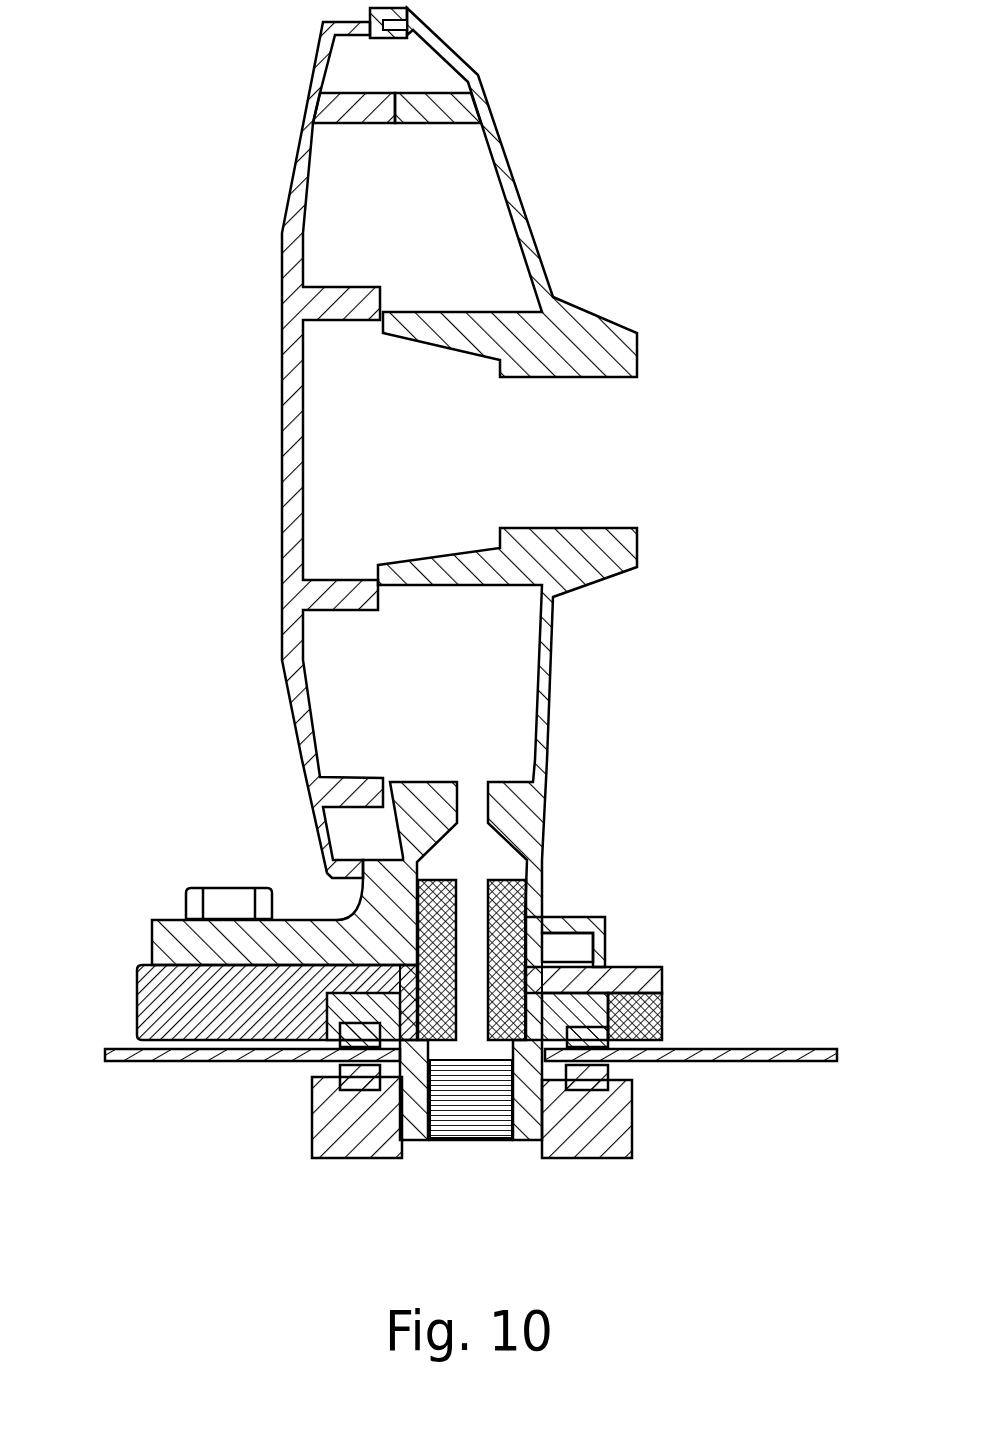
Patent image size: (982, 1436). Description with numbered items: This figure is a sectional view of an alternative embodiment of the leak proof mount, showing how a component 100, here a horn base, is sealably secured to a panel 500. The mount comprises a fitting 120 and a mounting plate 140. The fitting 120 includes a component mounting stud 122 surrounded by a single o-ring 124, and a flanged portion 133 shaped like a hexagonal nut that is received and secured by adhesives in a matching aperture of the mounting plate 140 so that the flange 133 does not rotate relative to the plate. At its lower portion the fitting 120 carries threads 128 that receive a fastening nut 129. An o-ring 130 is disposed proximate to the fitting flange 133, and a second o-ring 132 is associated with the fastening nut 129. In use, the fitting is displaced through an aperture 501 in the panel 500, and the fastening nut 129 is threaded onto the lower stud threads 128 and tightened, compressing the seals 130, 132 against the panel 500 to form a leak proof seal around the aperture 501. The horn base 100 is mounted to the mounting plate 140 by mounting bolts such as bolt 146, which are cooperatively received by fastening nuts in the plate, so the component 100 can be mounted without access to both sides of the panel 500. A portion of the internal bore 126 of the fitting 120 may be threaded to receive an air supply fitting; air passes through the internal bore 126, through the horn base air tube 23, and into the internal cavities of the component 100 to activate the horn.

The component 100 is at (289, 698).
The horn base air tube 23 is at (535, 885).
The o-ring 124 is at (548, 920).
The component mounting stud 122 is at (545, 957).
The flanged portion 133 is at (660, 1003).
The o-ring 130 is at (660, 1043).
The mounting plate 140 is at (136, 997).
The component fastening bolt 146 is at (240, 895).
The panel 500 is at (813, 1050).
The aperture 501 is at (340, 1065).
The o-ring 132 is at (607, 1070).
The fastening nut 129 is at (633, 1127).
The fitting 120 is at (447, 1140).
The threads 128 is at (520, 1140).
The internal bore 126 is at (478, 1130).